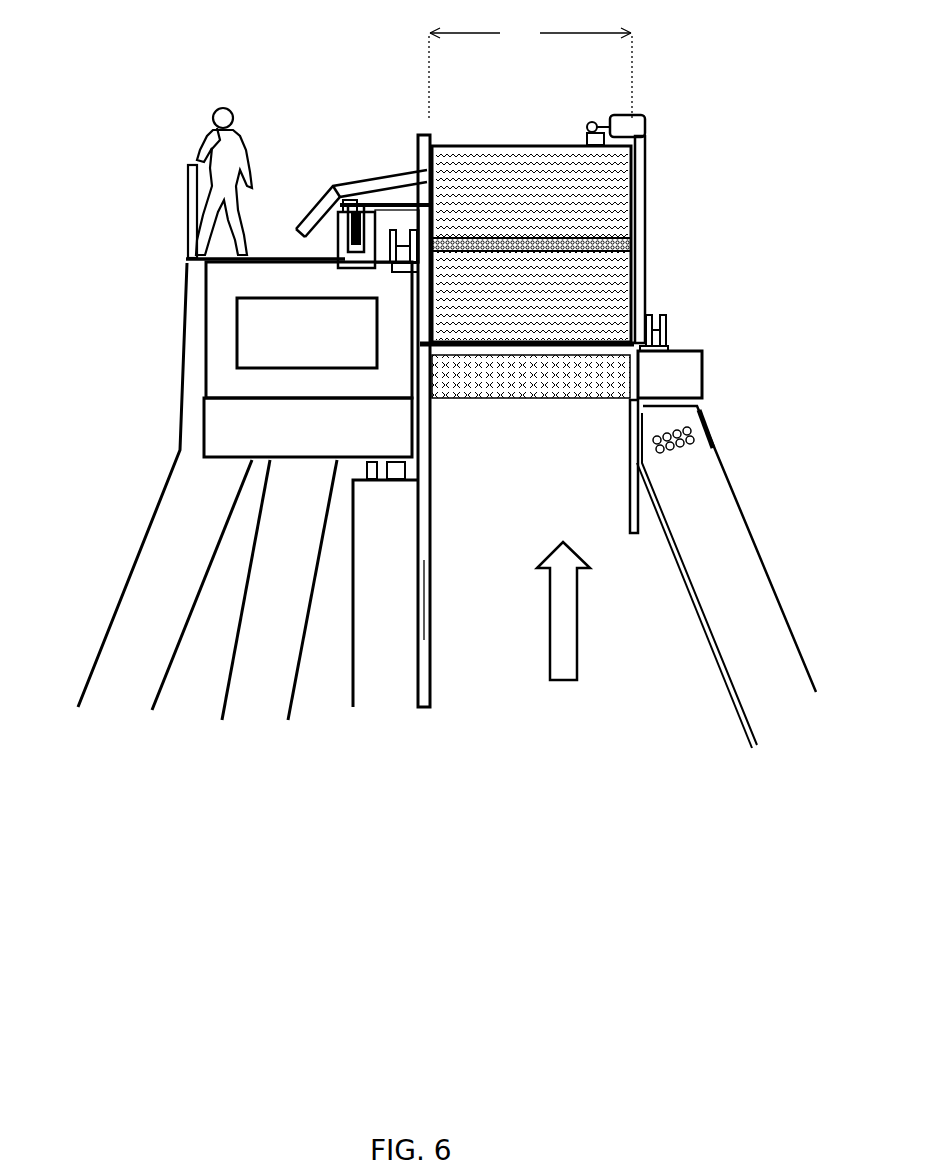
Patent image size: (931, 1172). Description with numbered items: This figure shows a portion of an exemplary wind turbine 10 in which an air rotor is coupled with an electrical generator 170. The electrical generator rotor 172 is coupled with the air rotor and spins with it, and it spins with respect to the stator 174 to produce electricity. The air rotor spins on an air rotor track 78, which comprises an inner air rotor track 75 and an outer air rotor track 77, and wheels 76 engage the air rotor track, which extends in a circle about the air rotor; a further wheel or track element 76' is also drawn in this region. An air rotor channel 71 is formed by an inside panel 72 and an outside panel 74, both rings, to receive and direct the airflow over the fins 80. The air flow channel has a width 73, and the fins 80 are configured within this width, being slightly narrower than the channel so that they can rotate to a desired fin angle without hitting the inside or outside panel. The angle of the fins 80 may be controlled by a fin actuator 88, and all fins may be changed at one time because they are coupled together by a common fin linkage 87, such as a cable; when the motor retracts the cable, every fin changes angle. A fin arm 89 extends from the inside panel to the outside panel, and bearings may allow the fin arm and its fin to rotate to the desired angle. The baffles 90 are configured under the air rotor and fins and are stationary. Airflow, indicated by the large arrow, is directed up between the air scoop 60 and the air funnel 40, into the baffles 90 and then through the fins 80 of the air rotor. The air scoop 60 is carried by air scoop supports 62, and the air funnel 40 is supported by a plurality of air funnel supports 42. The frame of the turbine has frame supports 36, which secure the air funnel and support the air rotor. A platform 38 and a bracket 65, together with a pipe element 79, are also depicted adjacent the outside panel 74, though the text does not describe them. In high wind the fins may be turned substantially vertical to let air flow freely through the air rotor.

The wind turbine 10 is at (222, 88).
The frame supports 36 is at (172, 547).
The operator platform 38 is at (223, 297).
The air funnel 40 is at (705, 632).
The air funnel supports 42 is at (690, 515).
The air scoop 60 is at (430, 605).
The air scoop supports 62 is at (392, 694).
The mounting bracket 65 is at (425, 462).
The air rotor channel 71 is at (515, 145).
The inside panel 72 is at (645, 205).
The width 73 is at (530, 73).
The outside panel 74 is at (426, 136).
The inner air rotor track 75 is at (662, 345).
The air rotor wheels 76 is at (537, 611).
The mounting bracket 76' is at (683, 299).
The outer air rotor track 77 is at (395, 228).
The air rotor track 78 is at (703, 355).
The supply pipe 79 is at (330, 190).
The fins 80 is at (500, 175).
The fin linkage 87 is at (592, 120).
The fin actuator 88 is at (645, 126).
The fin arm 89 is at (535, 240).
The baffles 90 is at (553, 372).
The electrical generator 170 is at (340, 187).
The electrical generator rotor 172 is at (333, 212).
The stator 174 is at (345, 250).